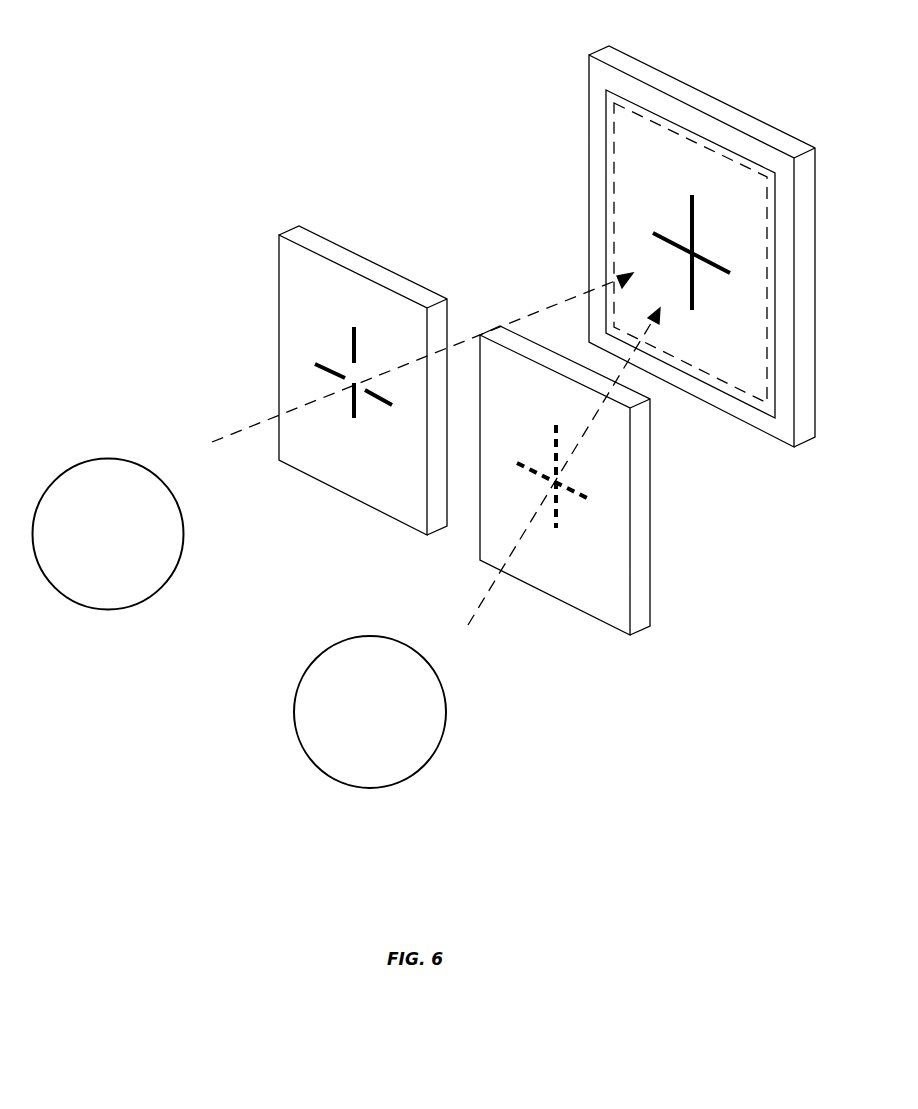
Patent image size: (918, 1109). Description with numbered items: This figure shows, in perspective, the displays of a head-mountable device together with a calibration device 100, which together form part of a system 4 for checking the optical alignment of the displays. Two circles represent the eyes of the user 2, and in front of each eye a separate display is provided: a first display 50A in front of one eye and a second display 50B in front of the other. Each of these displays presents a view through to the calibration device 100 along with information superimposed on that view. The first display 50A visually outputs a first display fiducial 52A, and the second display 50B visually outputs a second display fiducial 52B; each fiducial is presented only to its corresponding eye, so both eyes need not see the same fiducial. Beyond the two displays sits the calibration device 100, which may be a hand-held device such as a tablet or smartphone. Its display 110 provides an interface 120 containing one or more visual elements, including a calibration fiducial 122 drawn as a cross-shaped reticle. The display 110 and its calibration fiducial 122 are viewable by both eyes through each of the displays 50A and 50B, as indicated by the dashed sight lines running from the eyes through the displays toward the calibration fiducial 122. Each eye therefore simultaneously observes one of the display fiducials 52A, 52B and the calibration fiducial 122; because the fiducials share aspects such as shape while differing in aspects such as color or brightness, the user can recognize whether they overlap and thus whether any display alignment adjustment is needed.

The system 4 is at (160, 96).
The user 2 is at (70, 467).
The first display 50A is at (279, 262).
The first display fiducial 52A is at (352, 418).
The second display 50B is at (650, 460).
The second display fiducial 52B is at (557, 527).
The calibration device 100 is at (644, 243).
The display 110 is at (703, 137).
The interface 120 is at (752, 173).
The calibration fiducial 122 is at (687, 198).